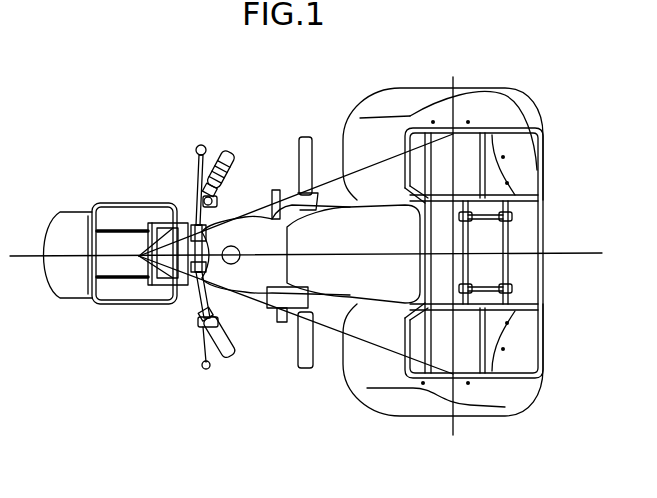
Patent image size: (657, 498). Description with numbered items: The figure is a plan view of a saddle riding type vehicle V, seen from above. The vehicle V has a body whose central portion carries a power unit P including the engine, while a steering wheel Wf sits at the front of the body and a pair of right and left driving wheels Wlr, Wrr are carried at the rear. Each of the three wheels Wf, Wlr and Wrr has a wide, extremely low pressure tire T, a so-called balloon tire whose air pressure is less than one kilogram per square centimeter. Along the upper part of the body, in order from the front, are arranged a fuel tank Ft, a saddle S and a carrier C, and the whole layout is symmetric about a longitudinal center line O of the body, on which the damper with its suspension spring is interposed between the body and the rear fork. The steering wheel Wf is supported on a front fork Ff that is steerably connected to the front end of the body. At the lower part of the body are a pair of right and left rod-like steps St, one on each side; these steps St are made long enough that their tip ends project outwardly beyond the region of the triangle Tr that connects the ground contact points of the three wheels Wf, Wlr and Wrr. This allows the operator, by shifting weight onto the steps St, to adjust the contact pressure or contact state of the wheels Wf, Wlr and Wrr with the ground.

The saddle riding type vehicle V is at (353, 88).
The steering wheel Wf is at (56, 280).
The right driving wheel Wrr is at (431, 88).
The left driving wheel Wlr is at (411, 414).
The tire T is at (532, 113).
The front fork Ff is at (134, 253).
The fuel tank Ft is at (237, 225).
The saddle S is at (392, 247).
The step St is at (302, 137).
The triangle Tr is at (322, 189).
The power unit P is at (295, 302).
The carrier C is at (547, 233).
The longitudinal center line O is at (583, 255).